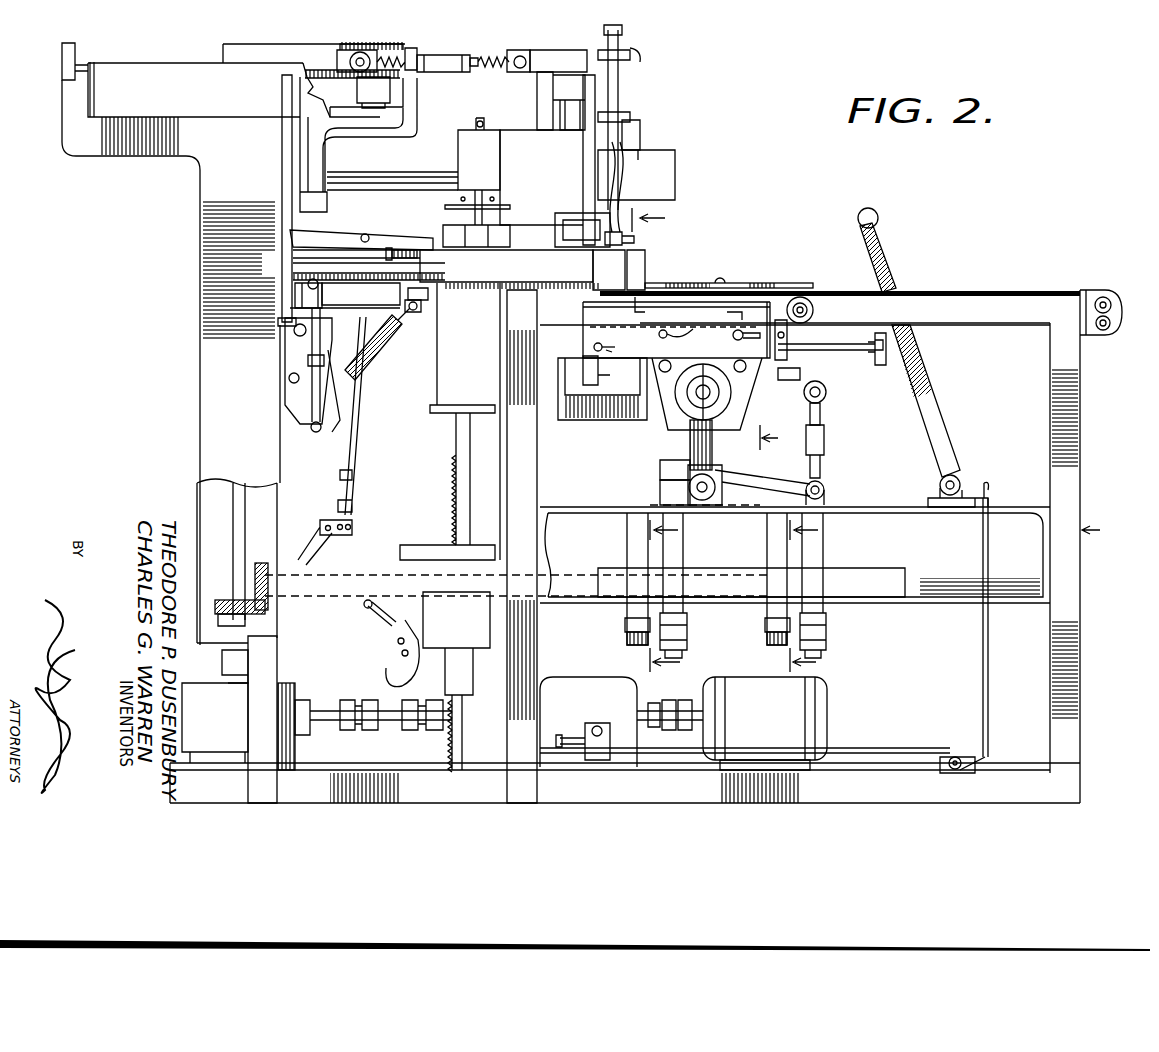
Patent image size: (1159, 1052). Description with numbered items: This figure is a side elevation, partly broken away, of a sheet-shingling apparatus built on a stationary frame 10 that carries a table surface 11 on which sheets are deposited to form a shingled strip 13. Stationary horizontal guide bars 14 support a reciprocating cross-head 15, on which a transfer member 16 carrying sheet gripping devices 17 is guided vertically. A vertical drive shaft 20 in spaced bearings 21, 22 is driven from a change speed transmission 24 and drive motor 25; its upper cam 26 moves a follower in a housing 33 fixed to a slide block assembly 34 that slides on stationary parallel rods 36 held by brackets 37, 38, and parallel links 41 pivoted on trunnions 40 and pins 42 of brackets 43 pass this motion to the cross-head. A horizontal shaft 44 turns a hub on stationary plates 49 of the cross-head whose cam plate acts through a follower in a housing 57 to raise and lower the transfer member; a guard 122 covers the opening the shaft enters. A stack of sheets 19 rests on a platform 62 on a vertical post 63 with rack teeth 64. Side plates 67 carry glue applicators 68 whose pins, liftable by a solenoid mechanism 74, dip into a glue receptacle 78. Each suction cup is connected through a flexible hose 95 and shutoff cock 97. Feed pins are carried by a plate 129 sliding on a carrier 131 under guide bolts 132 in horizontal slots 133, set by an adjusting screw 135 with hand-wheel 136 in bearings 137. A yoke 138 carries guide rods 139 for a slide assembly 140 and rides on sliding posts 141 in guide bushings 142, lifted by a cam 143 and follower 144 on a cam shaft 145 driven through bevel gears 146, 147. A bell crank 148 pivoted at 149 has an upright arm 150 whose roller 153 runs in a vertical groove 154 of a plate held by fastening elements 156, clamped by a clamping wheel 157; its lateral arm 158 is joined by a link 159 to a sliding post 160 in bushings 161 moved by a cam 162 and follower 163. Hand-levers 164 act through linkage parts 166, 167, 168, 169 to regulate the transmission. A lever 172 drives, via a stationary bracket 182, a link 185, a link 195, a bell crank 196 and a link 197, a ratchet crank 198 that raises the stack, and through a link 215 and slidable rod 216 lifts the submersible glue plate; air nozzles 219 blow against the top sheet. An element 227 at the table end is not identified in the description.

The stationary frame 10 is at (879, 373).
The table surface 11 is at (1020, 292).
The shingled strip 13 is at (680, 604).
The stationary horizontal guide bars 14 is at (627, 259).
The cross-head 15 is at (489, 294).
The transfer member 16 is at (534, 135).
The sheet gripping devices 17 is at (580, 213).
The stack of sheets 19 is at (455, 389).
The vertical drive shaft 20 is at (238, 506).
The bearing 21 is at (250, 663).
The bearing 22 is at (286, 692).
The change speed transmission 24 is at (567, 690).
The drive motor 25 is at (830, 705).
The cam 26 is at (392, 108).
The shell or housing 33 is at (360, 30).
The slide block assembly 34 is at (267, 61).
The stationary parallel rods 36 is at (100, 60).
The stationary bracket 37 is at (62, 69).
The stationary bracket 38 is at (447, 58).
The trunnions 40 is at (418, 53).
The parallel links 41 is at (479, 58).
The pins 42 is at (522, 56).
The brackets 43 is at (565, 50).
The horizontal shaft 44 is at (363, 183).
The stationary plates 49 is at (536, 91).
The housing 57 is at (642, 126).
The platform 62 is at (440, 415).
The vertical post 63 is at (458, 532).
The rack teeth 64 is at (454, 484).
The side plates 67 is at (548, 164).
The glue applicator 68 is at (514, 215).
The solenoid mechanism 74 is at (451, 161).
The glue receptacle 78 is at (361, 294).
The flexible hose 95 is at (622, 170).
The shutoff cocks 97 is at (620, 115).
The guard 122 is at (676, 166).
The plate 129 is at (684, 308).
The carrier 131 is at (782, 322).
The guide bolts 132 is at (663, 330).
The horizontal slots 133 is at (691, 333).
The adjusting screw 135 is at (878, 362).
The hand-wheel 136 is at (892, 365).
The spaced bearings 137 is at (792, 346).
The yoke 138 is at (578, 422).
The parallel guide rods 139 is at (800, 372).
The slide assembly 140 is at (586, 360).
The sliding posts 141 is at (659, 478).
The guide bushings 142 is at (659, 498).
The cam 143 is at (624, 631).
The follower 144 is at (630, 645).
The horizontal cam shaft 145 is at (712, 580).
The bevel gear 146 is at (222, 601).
The bevel gear 147 is at (257, 575).
The bell crank 148 is at (742, 478).
The pivot 149 is at (716, 489).
The upright arm 150 is at (690, 440).
The roller 153 is at (722, 390).
The vertical groove 154 is at (710, 357).
The fastening elements 156 is at (740, 340).
The clamping wheel 157 is at (690, 404).
The lateral arm 158 is at (826, 493).
The link 159 is at (826, 439).
The sliding post 160 is at (828, 411).
The bushings 161 is at (832, 562).
The cam 162 is at (766, 622).
The follower 163 is at (770, 645).
The hand-levers 164 is at (882, 236).
The linkage part 166 is at (980, 482).
The linkage part 167 is at (989, 678).
The linkage part 168 is at (960, 757).
The linkage part 169 is at (890, 746).
The lever 172 is at (362, 233).
The stationary bracket 182 is at (292, 340).
The link 185 is at (368, 356).
The link 195 is at (355, 436).
The bell crank 196 is at (332, 524).
The link 197 is at (370, 614).
The ratchet crank 198 is at (392, 659).
The link 215 is at (330, 430).
The vertically slidable rod 216 is at (308, 426).
The air nozzles 219 is at (420, 302).
The roller bracket 227 is at (1102, 296).